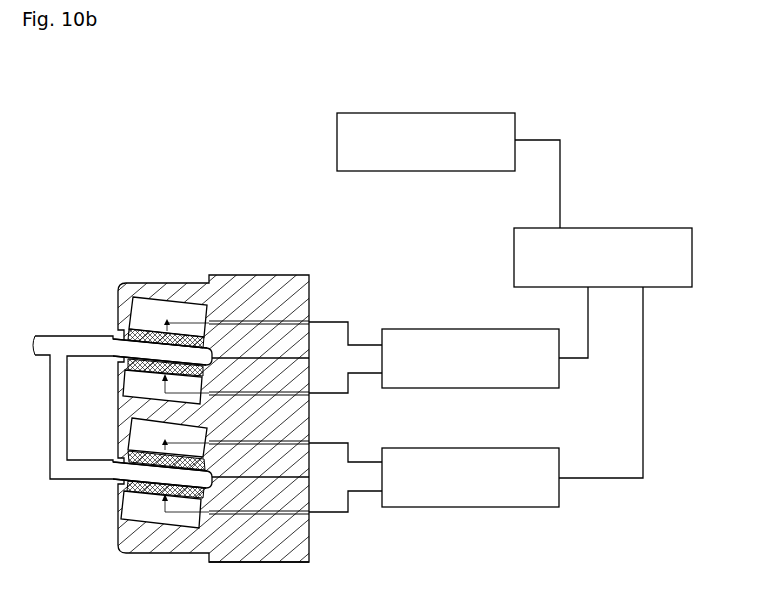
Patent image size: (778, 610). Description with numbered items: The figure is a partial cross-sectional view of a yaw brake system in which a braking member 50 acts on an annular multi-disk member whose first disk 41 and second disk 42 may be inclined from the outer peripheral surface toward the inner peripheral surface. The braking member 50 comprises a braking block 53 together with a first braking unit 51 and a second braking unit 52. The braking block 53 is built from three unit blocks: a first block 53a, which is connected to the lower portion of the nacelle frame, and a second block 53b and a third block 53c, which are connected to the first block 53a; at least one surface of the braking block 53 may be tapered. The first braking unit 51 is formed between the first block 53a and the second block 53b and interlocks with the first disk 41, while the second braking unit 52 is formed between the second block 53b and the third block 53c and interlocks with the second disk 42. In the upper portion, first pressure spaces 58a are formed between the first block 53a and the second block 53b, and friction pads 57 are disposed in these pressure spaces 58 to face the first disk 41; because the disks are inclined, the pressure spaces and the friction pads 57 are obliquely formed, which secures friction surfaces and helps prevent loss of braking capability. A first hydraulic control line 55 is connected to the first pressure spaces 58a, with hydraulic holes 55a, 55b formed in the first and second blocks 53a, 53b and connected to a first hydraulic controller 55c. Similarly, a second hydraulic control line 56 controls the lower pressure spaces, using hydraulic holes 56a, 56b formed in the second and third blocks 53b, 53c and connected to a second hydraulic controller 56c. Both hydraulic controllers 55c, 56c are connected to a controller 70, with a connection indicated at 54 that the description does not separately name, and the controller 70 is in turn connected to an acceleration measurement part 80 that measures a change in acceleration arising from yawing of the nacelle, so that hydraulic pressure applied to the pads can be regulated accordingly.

The first disk 41 is at (146, 320).
The second disk 42 is at (140, 501).
The braking member 50 is at (85, 231).
The first braking unit 51 is at (106, 327).
The second braking unit 52 is at (108, 483).
The braking block 53 is at (284, 268).
The first block 53a is at (283, 297).
The second block 53b is at (278, 416).
The third block 53c is at (277, 553).
The hydraulic line 54 is at (652, 366).
The first hydraulic control line 55 is at (412, 324).
The hydraulic hole 55a is at (290, 318).
The hydraulic hole 55b is at (280, 388).
The first hydraulic controller 55c is at (433, 329).
The second hydraulic control line 56 is at (538, 440).
The hydraulic hole 56a is at (288, 445).
The hydraulic hole 56b is at (288, 513).
The second hydraulic controller 56c is at (437, 448).
The friction pads 57 is at (140, 497).
The friction pads 58 is at (140, 506).
The first pressure spaces 58a is at (152, 387).
The controller 70 is at (605, 228).
The acceleration measurement part 80 is at (424, 113).